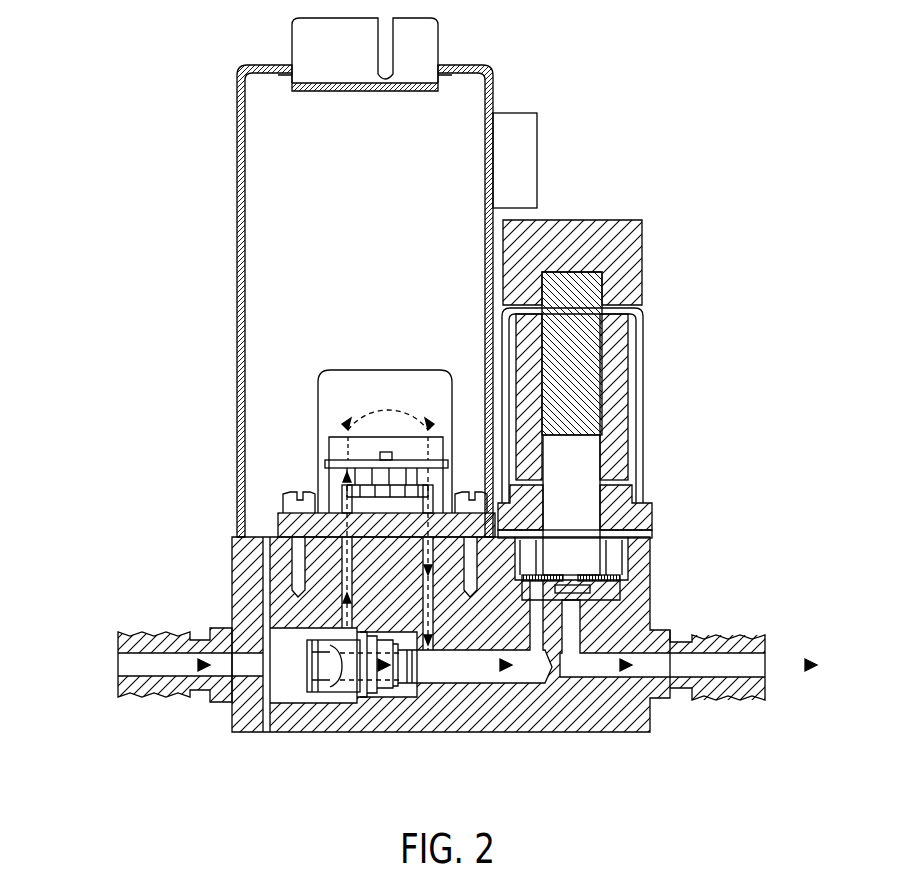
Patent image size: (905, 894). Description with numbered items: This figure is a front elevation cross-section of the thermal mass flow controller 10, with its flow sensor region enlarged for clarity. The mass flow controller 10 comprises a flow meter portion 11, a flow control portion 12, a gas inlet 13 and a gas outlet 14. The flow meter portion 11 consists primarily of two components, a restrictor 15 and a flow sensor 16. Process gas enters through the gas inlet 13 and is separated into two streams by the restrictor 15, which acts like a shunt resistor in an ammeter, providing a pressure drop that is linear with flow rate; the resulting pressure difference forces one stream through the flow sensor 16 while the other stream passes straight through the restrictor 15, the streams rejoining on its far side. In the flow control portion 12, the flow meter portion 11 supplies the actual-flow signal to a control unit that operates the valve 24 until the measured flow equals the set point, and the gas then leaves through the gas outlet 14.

The thermal mass flow controller 10 is at (579, 92).
The flow meter portion 11 is at (218, 316).
The flow control portion 12 is at (659, 350).
The gas inlet 13 is at (108, 647).
The gas outlet 14 is at (773, 650).
The restrictor 15 is at (313, 686).
The flow sensor 16 is at (345, 445).
The valve 24 is at (607, 591).